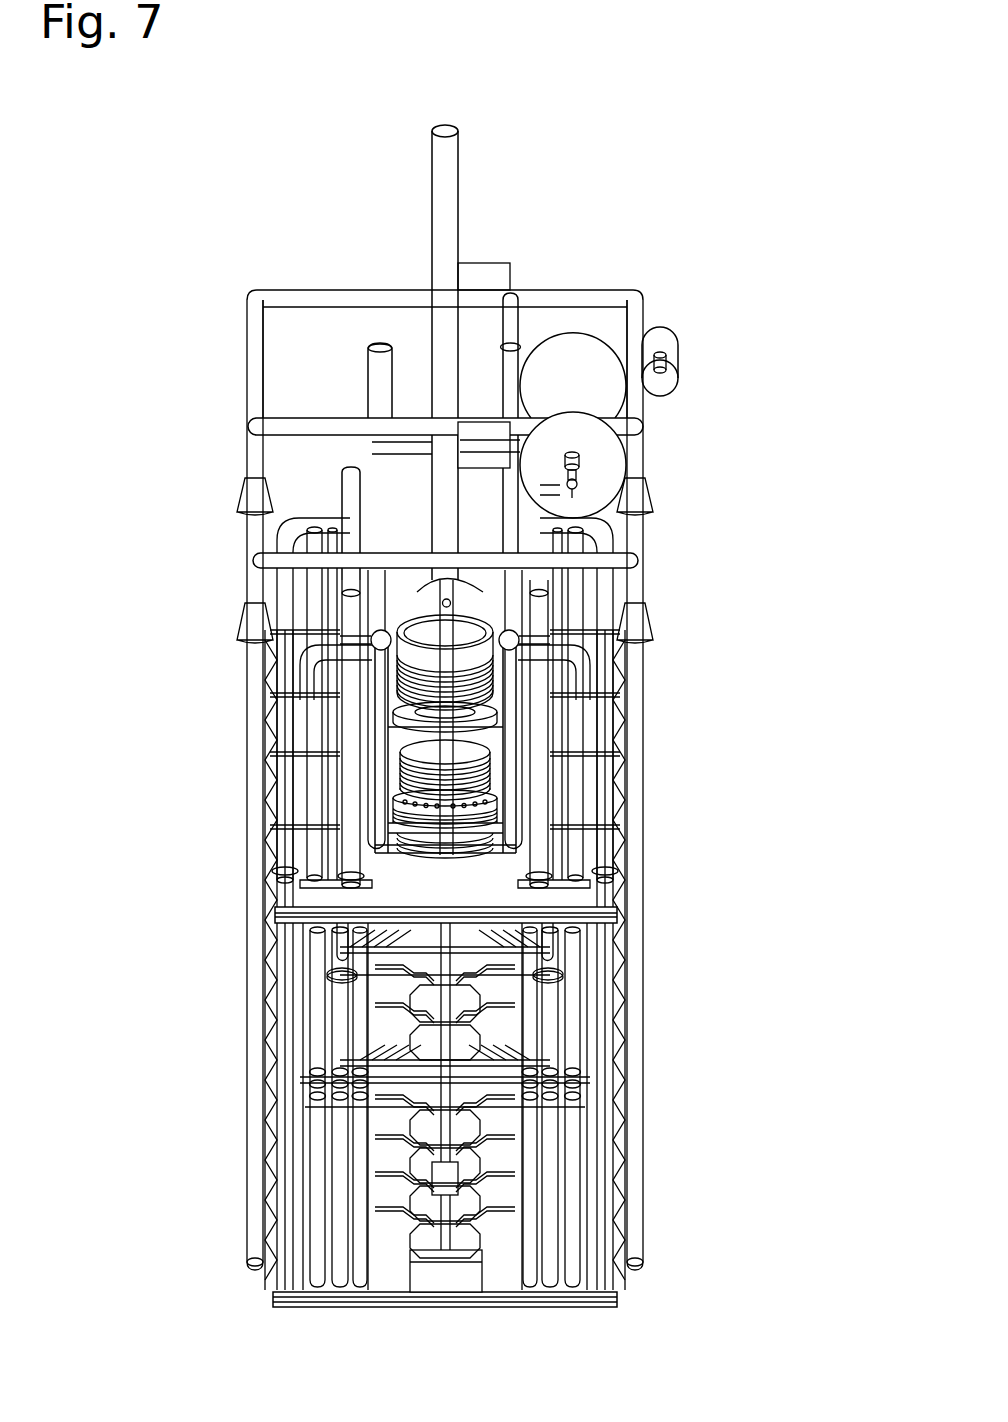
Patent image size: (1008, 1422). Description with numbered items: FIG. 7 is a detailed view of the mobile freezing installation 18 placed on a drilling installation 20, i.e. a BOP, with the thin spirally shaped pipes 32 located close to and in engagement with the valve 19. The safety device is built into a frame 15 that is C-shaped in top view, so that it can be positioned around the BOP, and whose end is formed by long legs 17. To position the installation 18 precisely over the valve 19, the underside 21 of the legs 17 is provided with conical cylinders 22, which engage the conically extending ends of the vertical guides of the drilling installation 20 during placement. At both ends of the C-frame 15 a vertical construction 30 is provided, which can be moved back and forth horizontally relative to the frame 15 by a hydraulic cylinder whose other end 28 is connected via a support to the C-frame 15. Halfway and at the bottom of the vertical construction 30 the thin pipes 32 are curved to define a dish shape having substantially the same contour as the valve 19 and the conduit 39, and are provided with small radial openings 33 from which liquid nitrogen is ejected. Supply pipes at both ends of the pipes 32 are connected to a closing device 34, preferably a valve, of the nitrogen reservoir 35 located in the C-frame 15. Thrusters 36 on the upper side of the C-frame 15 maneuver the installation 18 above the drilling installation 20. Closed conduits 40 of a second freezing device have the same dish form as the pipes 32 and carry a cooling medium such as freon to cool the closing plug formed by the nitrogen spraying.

The frame 15 is at (255, 338).
The legs 17 is at (232, 418).
The installation 18 is at (365, 297).
The valve 19 is at (402, 985).
The drilling installation 20 is at (235, 853).
The underside 21 is at (230, 447).
The conical cylinders 22 is at (232, 578).
The other end 28 is at (556, 423).
The vertical construction 30 is at (558, 620).
The thin pipes 32 is at (482, 686).
The openings 33 is at (520, 793).
The closing device 34 is at (603, 468).
The nitrogen reservoir 35 is at (630, 316).
The thrusters 36 is at (670, 342).
The conduit 39 is at (478, 172).
The closed conduits 40 is at (445, 701).